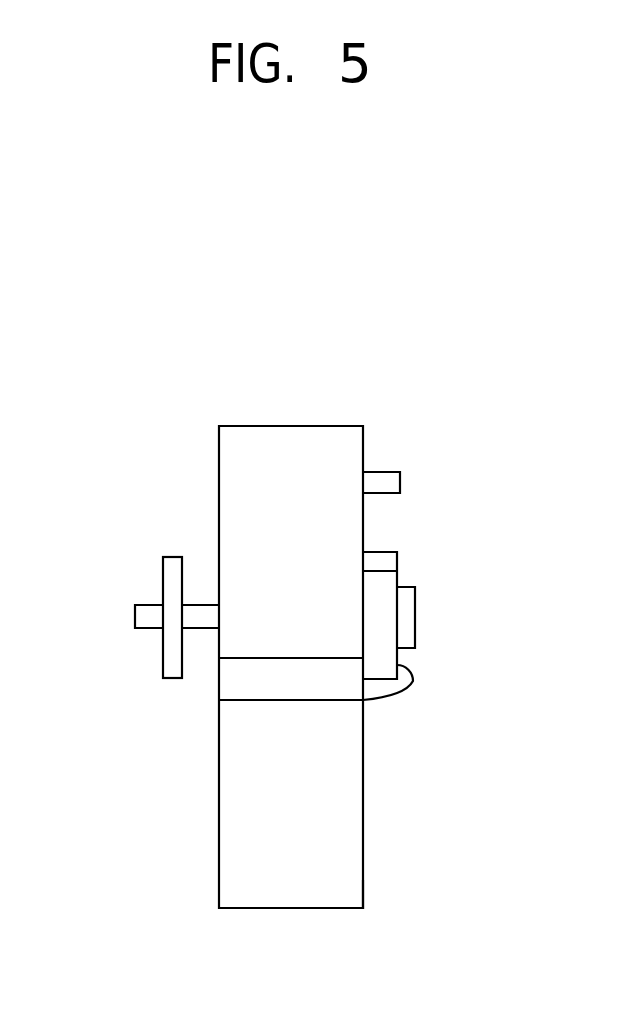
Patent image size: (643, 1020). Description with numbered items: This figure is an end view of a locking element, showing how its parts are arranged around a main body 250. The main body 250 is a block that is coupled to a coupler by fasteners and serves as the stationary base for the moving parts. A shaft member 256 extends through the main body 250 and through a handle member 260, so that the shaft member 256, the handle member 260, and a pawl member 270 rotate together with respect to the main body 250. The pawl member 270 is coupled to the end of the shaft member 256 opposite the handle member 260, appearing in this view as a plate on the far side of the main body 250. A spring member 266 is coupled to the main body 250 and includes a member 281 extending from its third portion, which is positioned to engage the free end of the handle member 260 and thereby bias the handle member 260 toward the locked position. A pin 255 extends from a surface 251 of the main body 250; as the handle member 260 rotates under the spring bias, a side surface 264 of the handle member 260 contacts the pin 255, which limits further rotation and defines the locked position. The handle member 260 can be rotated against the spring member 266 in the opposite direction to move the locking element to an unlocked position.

The main body 250 is at (335, 813).
The surface 251 is at (367, 898).
The pin 255 is at (383, 481).
The shaft member 256 is at (202, 618).
The handle member 260 is at (385, 617).
The side surface 264 is at (395, 550).
The spring member 266 is at (277, 458).
The pawl member 270 is at (173, 565).
The member 281 is at (407, 682).